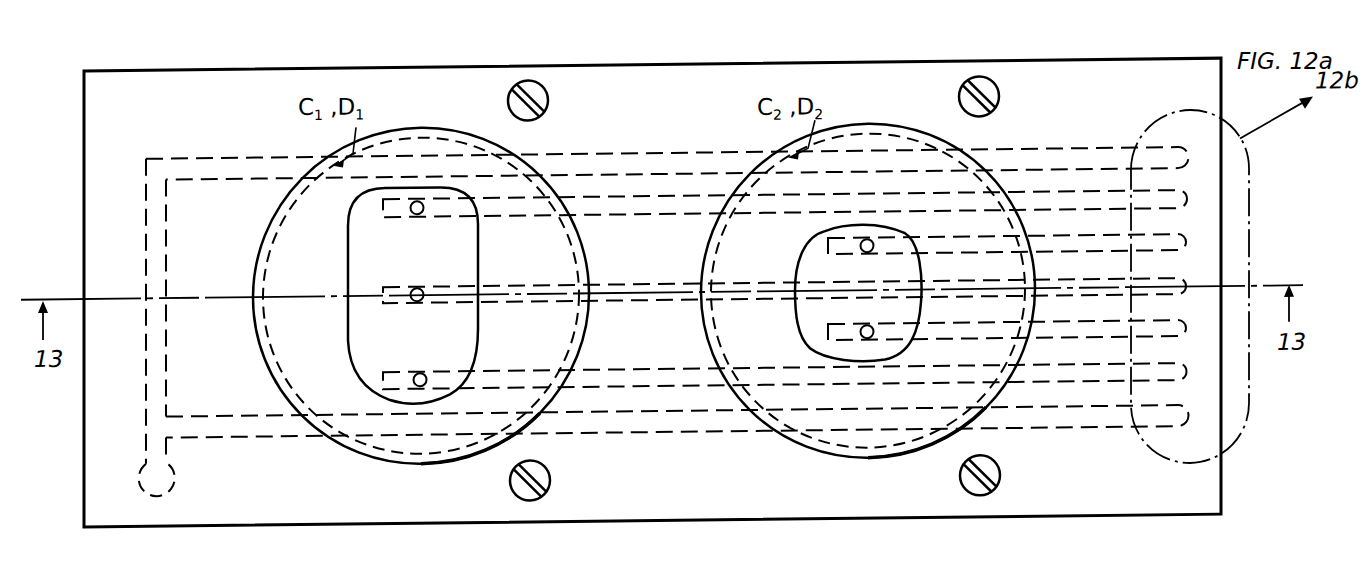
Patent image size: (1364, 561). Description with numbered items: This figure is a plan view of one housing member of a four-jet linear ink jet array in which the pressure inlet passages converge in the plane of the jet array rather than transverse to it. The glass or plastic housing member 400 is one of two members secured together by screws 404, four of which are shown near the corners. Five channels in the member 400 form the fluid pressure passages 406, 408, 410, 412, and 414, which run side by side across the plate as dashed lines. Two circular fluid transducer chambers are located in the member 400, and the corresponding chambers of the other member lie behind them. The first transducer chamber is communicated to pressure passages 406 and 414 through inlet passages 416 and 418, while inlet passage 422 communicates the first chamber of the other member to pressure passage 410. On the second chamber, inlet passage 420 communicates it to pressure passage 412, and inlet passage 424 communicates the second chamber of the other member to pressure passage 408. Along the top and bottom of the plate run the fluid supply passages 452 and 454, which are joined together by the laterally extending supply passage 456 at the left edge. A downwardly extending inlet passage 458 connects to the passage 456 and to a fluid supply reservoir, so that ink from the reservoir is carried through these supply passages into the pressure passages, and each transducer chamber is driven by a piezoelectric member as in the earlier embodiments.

The housing member 400 is at (1219, 494).
The screws 404 is at (549, 98).
The fluid pressure passage 406 is at (659, 370).
The fluid pressure passage 408 is at (980, 326).
The fluid pressure passage 410 is at (657, 283).
The fluid pressure passage 412 is at (968, 241).
The fluid pressure passage 414 is at (655, 216).
The inlet passage 416 is at (417, 367).
The inlet passage 418 is at (415, 215).
The inlet passage 420 is at (863, 257).
The inlet passage 422 is at (411, 303).
The inlet passage 424 is at (866, 327).
The fluid supply passage 452 is at (667, 434).
The fluid supply passage 454 is at (683, 153).
The laterally extending supply passage 456 is at (150, 237).
The downwardly extending inlet passage 458 is at (176, 476).